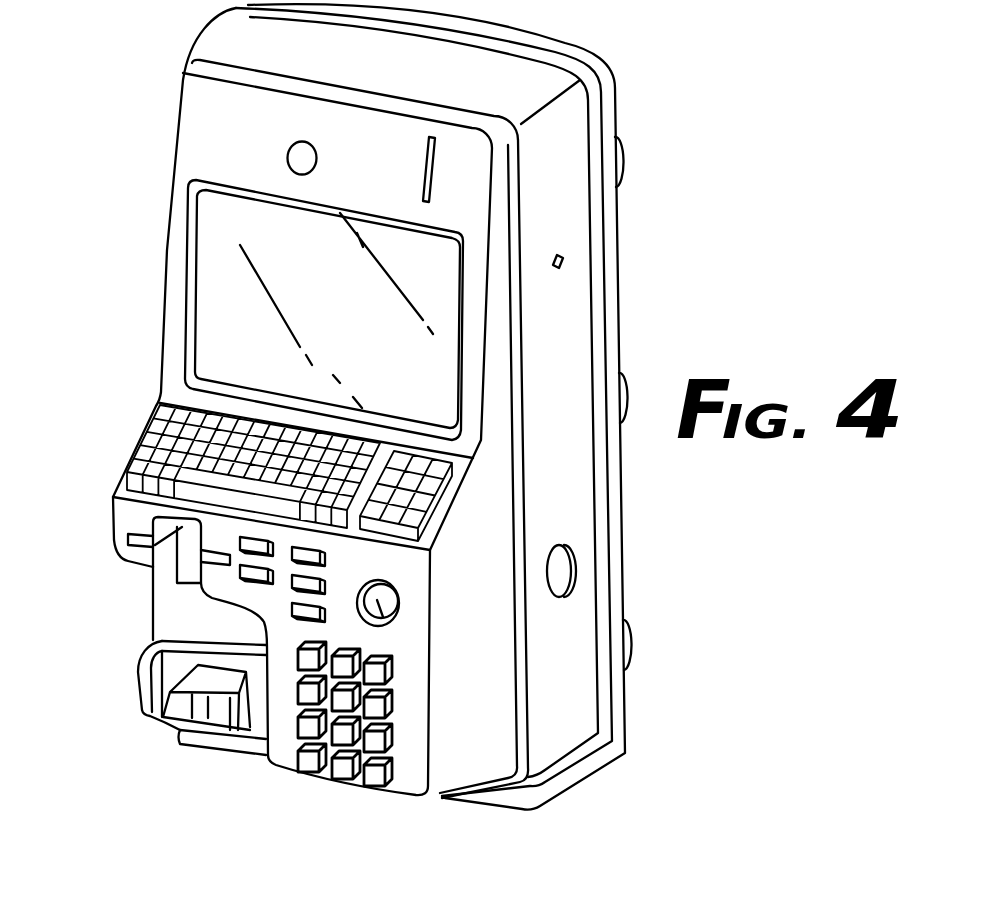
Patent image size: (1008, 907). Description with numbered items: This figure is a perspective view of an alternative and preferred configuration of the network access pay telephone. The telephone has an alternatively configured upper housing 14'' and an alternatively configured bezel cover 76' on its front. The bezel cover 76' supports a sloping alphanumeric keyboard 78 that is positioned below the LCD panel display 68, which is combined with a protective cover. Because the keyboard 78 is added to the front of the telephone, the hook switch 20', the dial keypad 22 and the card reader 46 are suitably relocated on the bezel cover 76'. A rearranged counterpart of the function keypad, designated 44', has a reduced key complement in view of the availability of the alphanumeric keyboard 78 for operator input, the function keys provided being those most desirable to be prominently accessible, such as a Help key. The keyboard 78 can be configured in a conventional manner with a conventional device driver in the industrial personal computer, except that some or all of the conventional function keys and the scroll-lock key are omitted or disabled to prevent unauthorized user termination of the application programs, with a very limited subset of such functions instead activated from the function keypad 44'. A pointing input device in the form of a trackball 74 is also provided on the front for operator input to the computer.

The upper housing 14'' is at (479, 407).
The bezel cover 76' is at (283, 401).
The LCD panel display 68 is at (342, 305).
The alphanumeric keyboard 78 is at (162, 428).
The card reader 46 is at (157, 577).
The hook switch 20' is at (156, 698).
The function keypad 44' is at (367, 579).
The trackball 74 is at (388, 623).
The dial keypad 22 is at (343, 763).